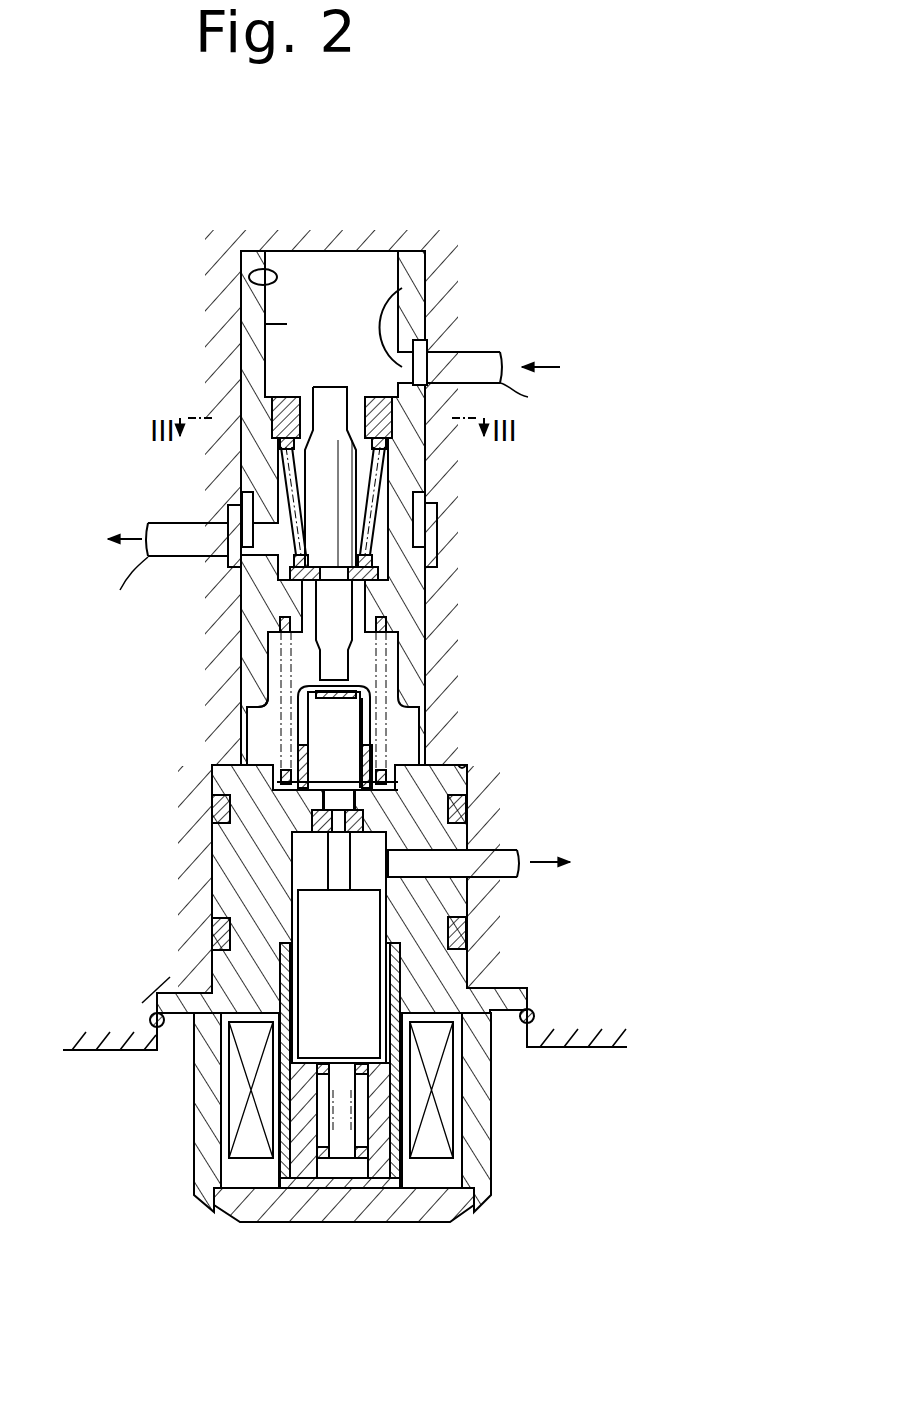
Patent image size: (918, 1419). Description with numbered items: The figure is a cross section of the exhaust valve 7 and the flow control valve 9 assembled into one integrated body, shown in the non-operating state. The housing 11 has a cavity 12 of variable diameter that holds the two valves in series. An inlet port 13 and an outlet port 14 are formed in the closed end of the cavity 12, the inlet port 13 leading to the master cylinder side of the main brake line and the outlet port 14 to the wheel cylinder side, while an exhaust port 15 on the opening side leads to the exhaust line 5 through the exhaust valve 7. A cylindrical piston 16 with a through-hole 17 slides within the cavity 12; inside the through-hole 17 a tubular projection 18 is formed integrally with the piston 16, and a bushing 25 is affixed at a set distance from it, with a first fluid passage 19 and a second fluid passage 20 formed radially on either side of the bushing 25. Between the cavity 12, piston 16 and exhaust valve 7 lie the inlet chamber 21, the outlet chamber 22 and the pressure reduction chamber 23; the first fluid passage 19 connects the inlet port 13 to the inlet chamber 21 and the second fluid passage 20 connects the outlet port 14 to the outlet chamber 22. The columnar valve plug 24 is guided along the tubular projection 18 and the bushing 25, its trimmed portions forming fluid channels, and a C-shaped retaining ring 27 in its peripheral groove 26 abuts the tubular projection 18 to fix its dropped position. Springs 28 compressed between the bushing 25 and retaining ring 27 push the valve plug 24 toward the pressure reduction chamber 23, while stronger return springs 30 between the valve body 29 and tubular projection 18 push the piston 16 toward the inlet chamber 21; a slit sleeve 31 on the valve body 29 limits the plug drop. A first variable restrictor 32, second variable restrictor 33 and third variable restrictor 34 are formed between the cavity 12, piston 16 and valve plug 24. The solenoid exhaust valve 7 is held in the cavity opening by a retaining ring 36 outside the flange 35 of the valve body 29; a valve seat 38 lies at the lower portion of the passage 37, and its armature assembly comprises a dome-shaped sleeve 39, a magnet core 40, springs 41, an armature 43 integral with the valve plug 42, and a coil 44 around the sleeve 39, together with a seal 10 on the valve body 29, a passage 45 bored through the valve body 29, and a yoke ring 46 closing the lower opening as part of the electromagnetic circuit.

The exhaust line 5 is at (500, 842).
The exhaust valve 7 is at (492, 1219).
The flow control valve 9 is at (242, 214).
The seal 10 is at (466, 936).
The housing 11 is at (84, 1056).
The cavity 12 is at (262, 281).
The inlet port 13 is at (432, 370).
The outlet port 14 is at (224, 528).
The exhaust port 15 is at (322, 740).
The piston 16 is at (413, 250).
The through-hole 17 is at (334, 262).
The tubular projection 18 is at (372, 606).
The first fluid passage 19 is at (400, 280).
The second fluid passage 20 is at (272, 548).
The inlet chamber 21 is at (287, 324).
The outlet chamber 22 is at (283, 476).
The pressure reduction chamber 23 is at (262, 724).
The valve plug 24 is at (430, 519).
The bushing 25 is at (276, 381).
The peripheral groove 26 is at (380, 553).
The retaining ring 27 is at (386, 578).
The springs 28 is at (362, 480).
The valve body 29 is at (463, 768).
The return springs 30 is at (385, 722).
The sleeve 31 is at (362, 690).
The first variable restrictor 32 is at (440, 336).
The second variable restrictor 33 is at (286, 412).
The third variable restrictor 34 is at (288, 594).
The flange 35 is at (160, 988).
The retaining ring 36 is at (150, 1017).
The passage 37 is at (336, 800).
The valve seat 38 is at (338, 862).
The sleeve 39 is at (403, 1164).
The magnet core 40 is at (307, 1166).
The springs 41 is at (287, 1093).
The valve plug 42 is at (333, 890).
The armature 43 is at (308, 1018).
The coil 44 is at (244, 1138).
The passage 45 is at (450, 863).
The yoke ring 46 is at (353, 1213).